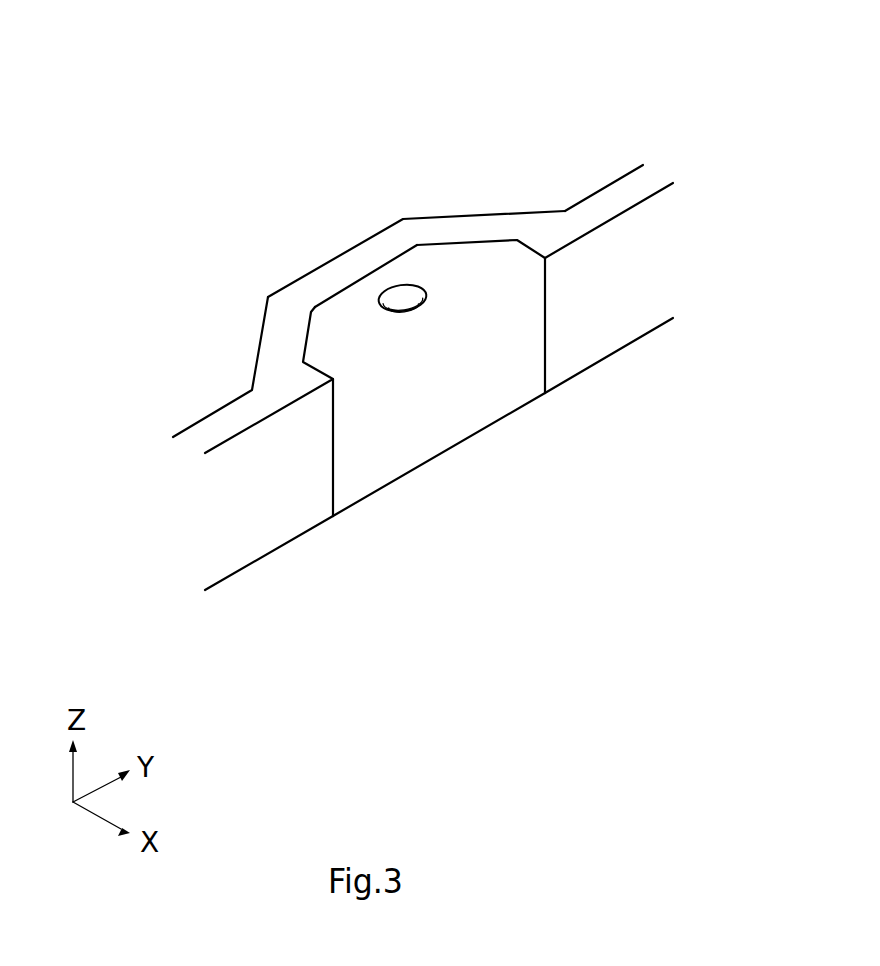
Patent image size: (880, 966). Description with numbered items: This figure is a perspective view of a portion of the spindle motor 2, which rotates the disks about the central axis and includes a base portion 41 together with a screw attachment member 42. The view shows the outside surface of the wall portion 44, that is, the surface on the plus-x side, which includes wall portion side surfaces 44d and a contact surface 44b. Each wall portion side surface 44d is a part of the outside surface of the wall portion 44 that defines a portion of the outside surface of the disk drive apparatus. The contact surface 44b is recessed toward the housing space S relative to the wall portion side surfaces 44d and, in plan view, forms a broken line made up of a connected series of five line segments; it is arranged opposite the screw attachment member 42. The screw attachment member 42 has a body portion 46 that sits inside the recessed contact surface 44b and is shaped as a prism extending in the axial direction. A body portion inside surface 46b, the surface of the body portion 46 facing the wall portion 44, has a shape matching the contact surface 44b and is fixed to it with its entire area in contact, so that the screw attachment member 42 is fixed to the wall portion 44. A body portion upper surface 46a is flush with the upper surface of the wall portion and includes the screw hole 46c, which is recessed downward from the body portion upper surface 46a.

The spindle motor 2 is at (616, 84).
The housing space S is at (184, 189).
The base portion 41 is at (648, 341).
The screw attachment member 42 is at (495, 433).
The wall portion 44 is at (213, 430).
The contact surface 44b is at (460, 244).
The wall portion side surface 44d is at (287, 512).
The body portion 46 is at (410, 445).
The body portion upper surface 46a is at (349, 331).
The body portion inside surface 46b is at (368, 273).
The screw hole 46c is at (402, 285).